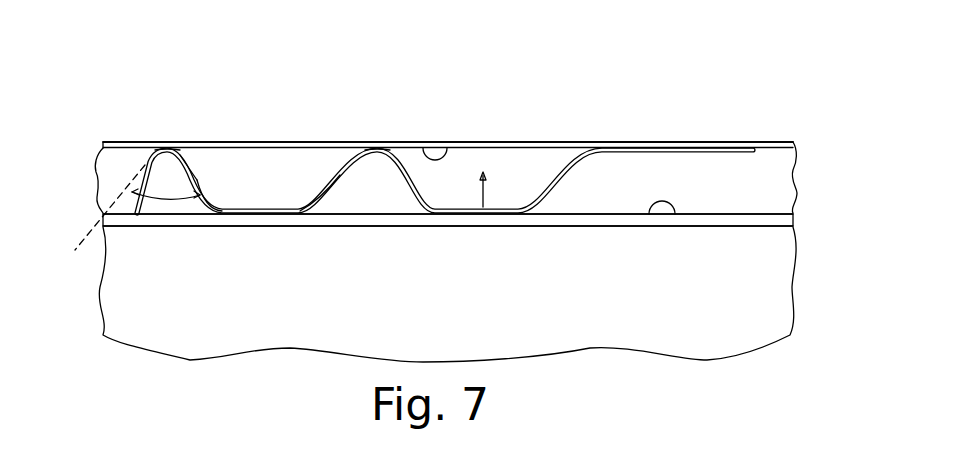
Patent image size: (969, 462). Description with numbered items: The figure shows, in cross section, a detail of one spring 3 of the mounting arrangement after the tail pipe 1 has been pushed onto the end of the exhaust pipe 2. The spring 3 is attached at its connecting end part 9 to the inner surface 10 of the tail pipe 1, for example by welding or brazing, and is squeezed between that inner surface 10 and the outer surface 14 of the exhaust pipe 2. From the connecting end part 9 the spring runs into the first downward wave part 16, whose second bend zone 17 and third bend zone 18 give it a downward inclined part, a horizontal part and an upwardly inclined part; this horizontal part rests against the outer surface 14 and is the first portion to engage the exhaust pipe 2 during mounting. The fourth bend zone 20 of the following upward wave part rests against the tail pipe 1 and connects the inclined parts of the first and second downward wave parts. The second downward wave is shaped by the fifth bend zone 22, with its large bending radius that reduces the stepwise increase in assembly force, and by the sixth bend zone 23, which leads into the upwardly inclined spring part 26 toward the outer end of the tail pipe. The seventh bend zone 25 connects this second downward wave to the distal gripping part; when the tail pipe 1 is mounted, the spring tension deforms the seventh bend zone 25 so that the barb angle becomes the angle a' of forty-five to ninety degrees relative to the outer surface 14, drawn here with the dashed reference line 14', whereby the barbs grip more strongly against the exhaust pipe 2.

The tail pipe 1 is at (132, 141).
The exhaust pipe 2 is at (375, 222).
The spring 3 is at (688, 150).
The connecting end part 9 is at (628, 147).
The inner surface 10 is at (447, 150).
The outer surface 14 is at (447, 281).
The reference line of inclined flank 14' is at (99, 221).
The first downward wave part 16 is at (505, 215).
The second bend zone 17 is at (533, 203).
The third bend zone 18 is at (423, 192).
The fourth bend zone 20 is at (376, 146).
The fifth bend zone 22 is at (330, 186).
The sixth bend zone 23 is at (207, 194).
The seventh bend zone 25 is at (168, 148).
The upwardly inclined spring part 26 is at (197, 179).
The angle a' is at (166, 186).